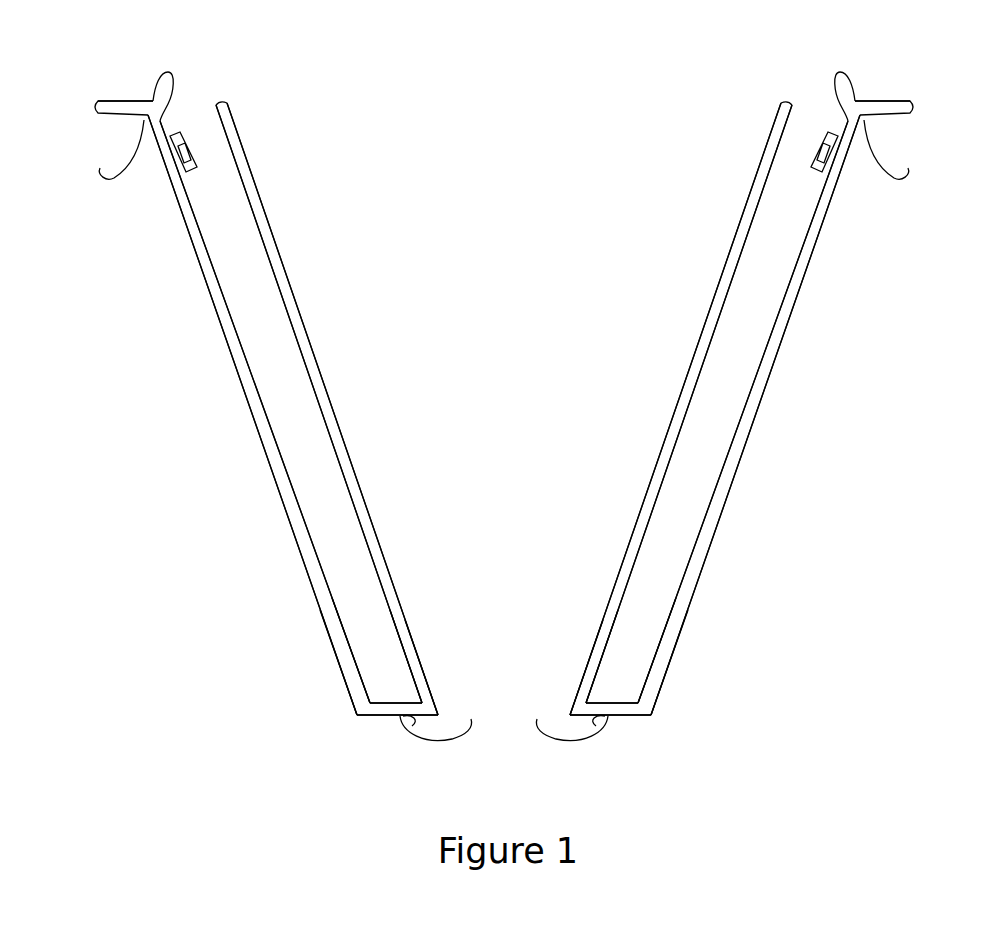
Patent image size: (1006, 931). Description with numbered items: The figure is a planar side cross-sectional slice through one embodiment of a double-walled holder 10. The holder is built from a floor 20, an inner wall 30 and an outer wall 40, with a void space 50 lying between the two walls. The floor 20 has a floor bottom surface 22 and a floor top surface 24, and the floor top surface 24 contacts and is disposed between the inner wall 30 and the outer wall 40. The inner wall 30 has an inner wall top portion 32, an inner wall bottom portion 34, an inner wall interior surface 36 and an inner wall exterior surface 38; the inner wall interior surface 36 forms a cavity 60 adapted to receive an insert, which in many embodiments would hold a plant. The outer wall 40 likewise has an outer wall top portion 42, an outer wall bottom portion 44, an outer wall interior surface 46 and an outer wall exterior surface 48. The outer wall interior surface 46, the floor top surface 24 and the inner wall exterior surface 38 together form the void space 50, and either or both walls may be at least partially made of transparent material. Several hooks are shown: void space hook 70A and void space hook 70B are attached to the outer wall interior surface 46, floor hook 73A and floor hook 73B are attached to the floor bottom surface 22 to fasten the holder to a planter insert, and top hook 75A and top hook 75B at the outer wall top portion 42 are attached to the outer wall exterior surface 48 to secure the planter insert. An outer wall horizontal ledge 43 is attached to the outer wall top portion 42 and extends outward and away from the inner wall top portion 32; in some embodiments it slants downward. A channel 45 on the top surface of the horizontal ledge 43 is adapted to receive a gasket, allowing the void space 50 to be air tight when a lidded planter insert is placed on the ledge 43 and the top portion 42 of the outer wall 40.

The double-walled holder 10 is at (842, 315).
The floor 20 is at (377, 710).
The floor bottom surface 22 is at (393, 721).
The floor top surface 24 is at (397, 702).
The inner wall 30 is at (285, 275).
The inner wall top portion 32 is at (231, 109).
The inner wall bottom portion 34 is at (431, 692).
The inner wall interior surface 36 is at (276, 241).
The inner wall exterior surface 38 is at (264, 252).
The outer wall 40 is at (250, 387).
The outer wall top portion 42 is at (498, 94).
The outer wall horizontal ledge 43 is at (112, 98).
The outer wall bottom portion 44 is at (355, 688).
The channel 45 is at (132, 100).
The outer wall interior surface 46 is at (246, 362).
The outer wall exterior surface 48 is at (254, 426).
The void space 50 is at (214, 199).
The cavity 60 is at (458, 182).
The void space hook 70A is at (822, 143).
The void space hook 70B is at (185, 143).
The floor hook 73A is at (534, 743).
The floor hook 73B is at (468, 744).
The top hook 75A is at (888, 191).
The top hook 75B is at (122, 183).